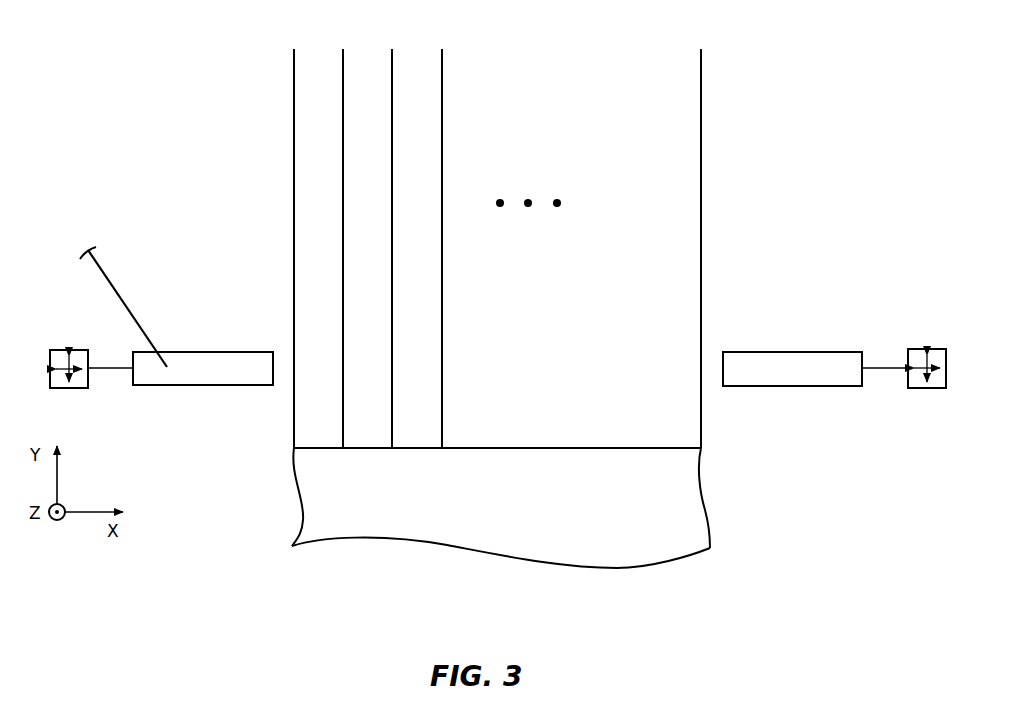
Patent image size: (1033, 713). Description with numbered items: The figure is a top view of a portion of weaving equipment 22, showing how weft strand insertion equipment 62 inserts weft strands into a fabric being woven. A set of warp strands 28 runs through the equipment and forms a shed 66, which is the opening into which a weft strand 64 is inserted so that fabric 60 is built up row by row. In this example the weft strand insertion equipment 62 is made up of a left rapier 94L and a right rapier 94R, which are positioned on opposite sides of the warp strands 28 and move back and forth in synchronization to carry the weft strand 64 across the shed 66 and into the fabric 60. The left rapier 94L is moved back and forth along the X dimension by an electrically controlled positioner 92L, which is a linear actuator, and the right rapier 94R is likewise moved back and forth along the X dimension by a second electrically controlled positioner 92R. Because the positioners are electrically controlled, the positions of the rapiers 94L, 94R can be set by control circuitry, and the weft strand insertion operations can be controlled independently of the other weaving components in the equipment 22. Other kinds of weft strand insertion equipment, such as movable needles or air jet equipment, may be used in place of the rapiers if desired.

The equipment 22 is at (853, 107).
The warp strands 28 is at (294, 60).
The fabric 60 is at (727, 450).
The weft strand insertion equipment 62 is at (171, 404).
The weft strand 64 is at (120, 295).
The shed 66 is at (719, 305).
The electrically controlled positioner 92L is at (63, 350).
The electrically controlled positioner 92R is at (931, 349).
The left rapier 94L is at (228, 352).
The right rapier 94R is at (818, 352).